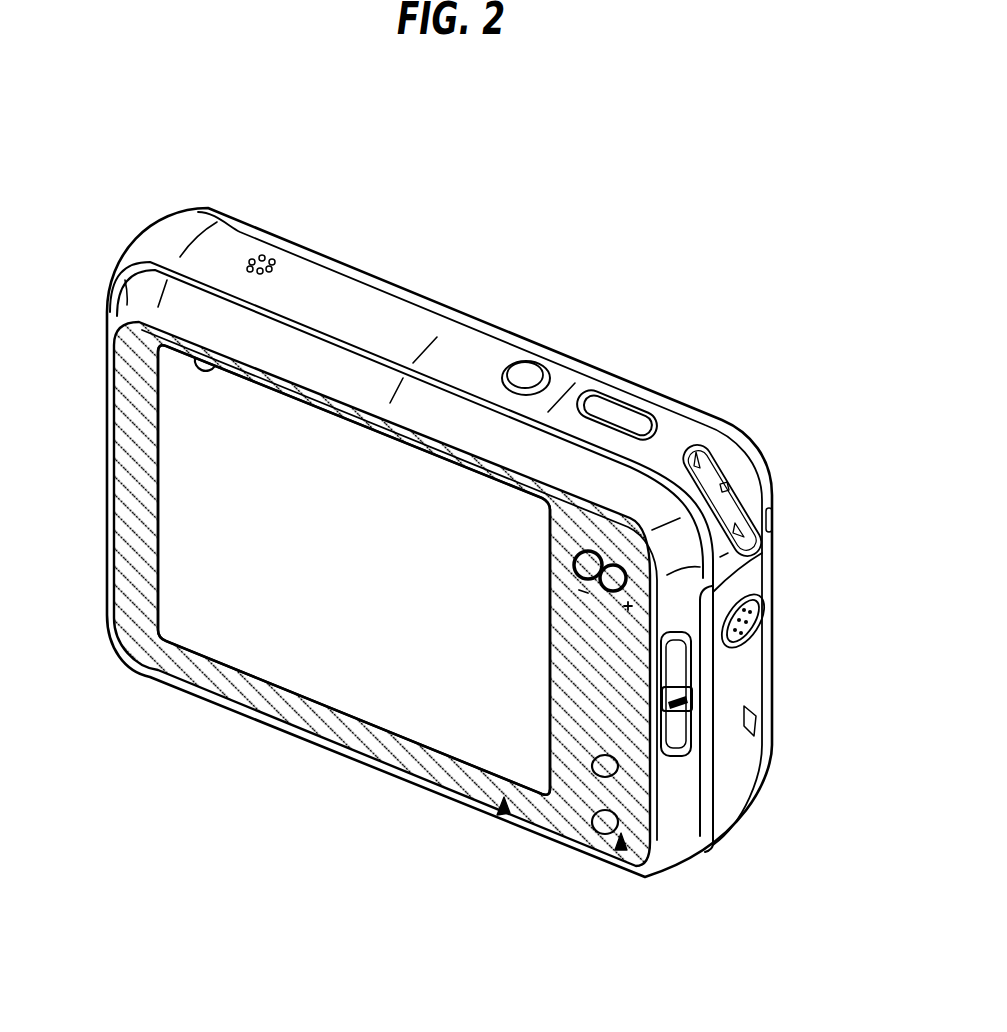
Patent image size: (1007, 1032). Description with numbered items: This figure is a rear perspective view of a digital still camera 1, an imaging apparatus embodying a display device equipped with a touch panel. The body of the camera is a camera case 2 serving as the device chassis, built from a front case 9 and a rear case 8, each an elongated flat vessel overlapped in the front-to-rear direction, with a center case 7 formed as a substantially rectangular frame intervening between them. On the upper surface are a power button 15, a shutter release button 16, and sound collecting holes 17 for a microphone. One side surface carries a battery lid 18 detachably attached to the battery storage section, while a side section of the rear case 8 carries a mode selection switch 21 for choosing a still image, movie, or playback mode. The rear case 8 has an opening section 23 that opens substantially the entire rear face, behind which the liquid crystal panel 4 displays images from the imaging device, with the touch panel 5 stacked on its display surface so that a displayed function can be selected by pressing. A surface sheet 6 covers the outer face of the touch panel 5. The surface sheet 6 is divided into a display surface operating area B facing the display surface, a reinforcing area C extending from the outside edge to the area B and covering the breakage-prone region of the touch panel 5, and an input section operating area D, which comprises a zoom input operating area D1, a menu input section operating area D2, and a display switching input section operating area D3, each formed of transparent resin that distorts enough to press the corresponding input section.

The digital still camera 1 is at (752, 256).
The camera case 2 is at (463, 185).
The liquid crystal panel 4 is at (380, 697).
The touch panel 5 is at (187, 485).
The surface sheet 6 is at (503, 805).
The center case 7 is at (374, 400).
The rear case 8 is at (386, 380).
The front case 9 is at (346, 308).
The power button 15 is at (524, 376).
The shutter release button 16 is at (618, 415).
The sound collecting holes 17 is at (255, 250).
The battery lid 18 is at (747, 667).
The mode selection switch 21 is at (675, 730).
The opening section 23 is at (200, 352).
The zoom input operating area D1 is at (615, 548).
The menu input section operating area D2 is at (612, 767).
The display switching input section operating area D3 is at (607, 818).
The input section operating area D is at (621, 848).
The display surface operating area B is at (290, 668).
The reinforcing area C is at (563, 832).